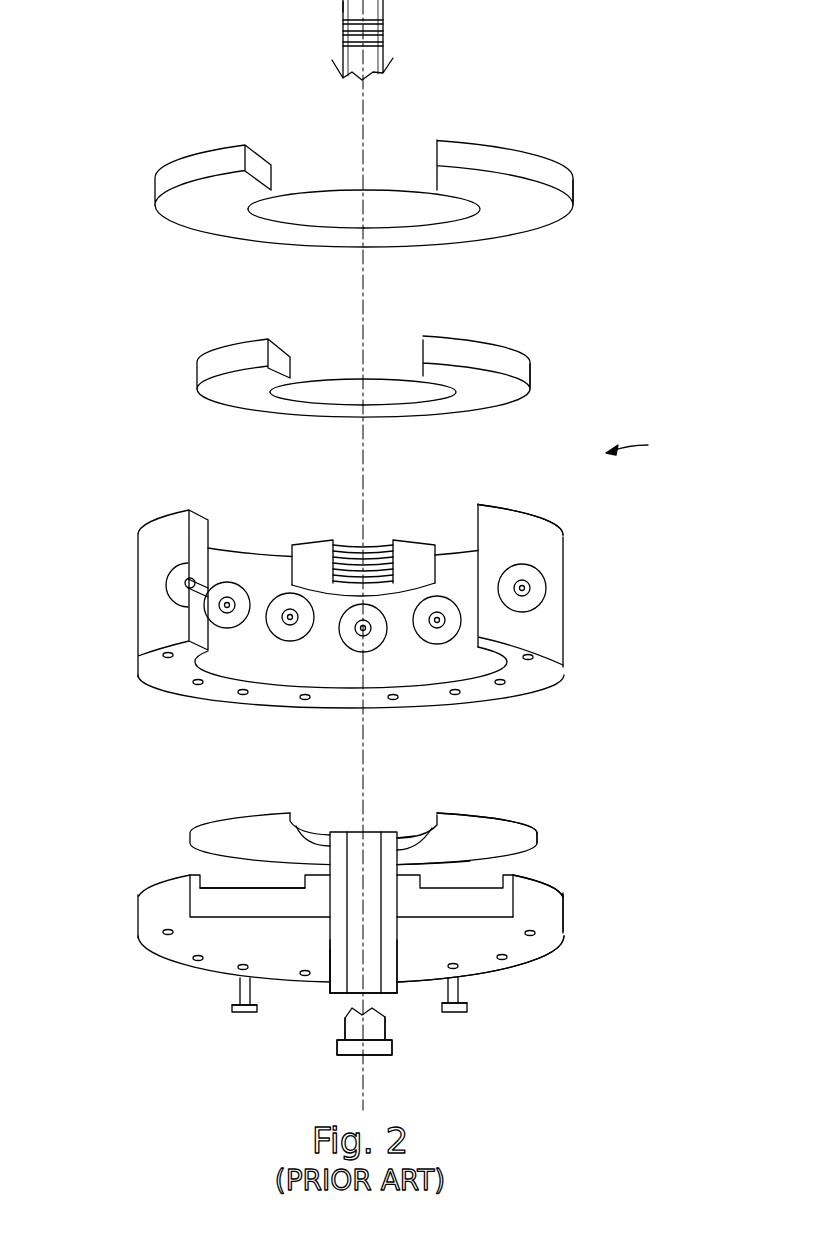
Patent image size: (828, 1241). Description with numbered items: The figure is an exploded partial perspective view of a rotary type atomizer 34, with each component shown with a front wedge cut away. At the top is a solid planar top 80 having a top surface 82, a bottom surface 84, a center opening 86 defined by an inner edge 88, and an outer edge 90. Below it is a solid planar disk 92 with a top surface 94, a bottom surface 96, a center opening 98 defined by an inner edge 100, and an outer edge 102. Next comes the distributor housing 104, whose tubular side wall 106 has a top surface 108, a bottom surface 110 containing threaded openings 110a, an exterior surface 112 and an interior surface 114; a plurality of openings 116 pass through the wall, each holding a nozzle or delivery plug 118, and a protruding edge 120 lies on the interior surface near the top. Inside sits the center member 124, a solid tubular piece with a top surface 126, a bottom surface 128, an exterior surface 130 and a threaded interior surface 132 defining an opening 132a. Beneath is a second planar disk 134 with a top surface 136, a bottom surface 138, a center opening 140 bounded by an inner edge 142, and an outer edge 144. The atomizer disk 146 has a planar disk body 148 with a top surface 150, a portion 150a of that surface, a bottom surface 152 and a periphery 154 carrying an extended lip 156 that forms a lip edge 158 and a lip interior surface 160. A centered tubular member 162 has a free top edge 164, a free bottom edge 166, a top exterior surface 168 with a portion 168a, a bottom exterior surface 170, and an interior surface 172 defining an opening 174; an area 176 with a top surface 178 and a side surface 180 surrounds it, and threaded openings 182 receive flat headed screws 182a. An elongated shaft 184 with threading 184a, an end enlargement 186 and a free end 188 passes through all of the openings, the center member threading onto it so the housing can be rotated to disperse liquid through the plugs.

The rotary type atomizer 34 is at (642, 442).
The planar top 80 is at (498, 157).
The top surface 82 is at (198, 150).
The bottom surface 84 is at (520, 225).
The center opening 86 is at (297, 207).
The inner edge 88 is at (410, 213).
The outer edge 90 is at (573, 188).
The planar disk 92 is at (495, 398).
The top surface 94 is at (487, 343).
The bottom surface 96 is at (220, 398).
The center opening 98 is at (328, 388).
The inner edge 100 is at (378, 388).
The outer edge 102 is at (533, 372).
The distributor housing 104 is at (548, 552).
The tubular side wall 106 is at (555, 622).
The top surface 108 is at (527, 510).
The bottom surface 110 is at (540, 692).
The at least partially threaded openings 110a is at (163, 665).
The exterior surface 112 is at (153, 583).
The interior surface 114 is at (210, 558).
The openings 116 is at (230, 630).
The nozzle or delivery plug 118 is at (232, 585).
The protruding edge 120 is at (463, 548).
The center member 124 is at (413, 540).
The top surface 126 is at (313, 540).
The bottom surface 128 is at (442, 552).
The exterior surface 130 is at (303, 545).
The threaded interior surface 132 is at (357, 545).
The opening 132a is at (370, 545).
The second planar disk 134 is at (550, 817).
The top surface 136 is at (482, 817).
The bottom surface 138 is at (545, 830).
The center opening 140 is at (313, 817).
The inner edge 142 is at (408, 817).
The outer edge 144 is at (165, 825).
The atomizer disk 146 is at (565, 900).
The planar disk body 148 is at (412, 962).
The top surface 150 is at (520, 878).
The portion of top surface 150a is at (312, 890).
The bottom surface 152 is at (460, 968).
The periphery 154 is at (568, 934).
The extended lip 156 is at (150, 893).
The lip edge 158 is at (560, 893).
The lip interior surface 160 is at (205, 880).
The tubular member 162 is at (327, 950).
The free top edge 164 is at (340, 817).
The free bottom edge 166 is at (402, 998).
The top exterior surface 168 is at (432, 817).
The portion of top exterior surface 168a is at (330, 862).
The bottom exterior surface 170 is at (400, 925).
The interior surface 172 is at (348, 900).
The opening 174 is at (345, 1012).
The area 176 is at (450, 868).
The top surface 178 is at (410, 865).
The side surface 180 is at (300, 880).
The at least partially threaded openings 182 is at (170, 937).
The flat headed screws 182a is at (242, 1012).
The elongated shaft 184 is at (415, 4).
The threading 184a is at (387, 28).
The end enlargement 186 is at (392, 1048).
The free end 188 is at (343, 6).